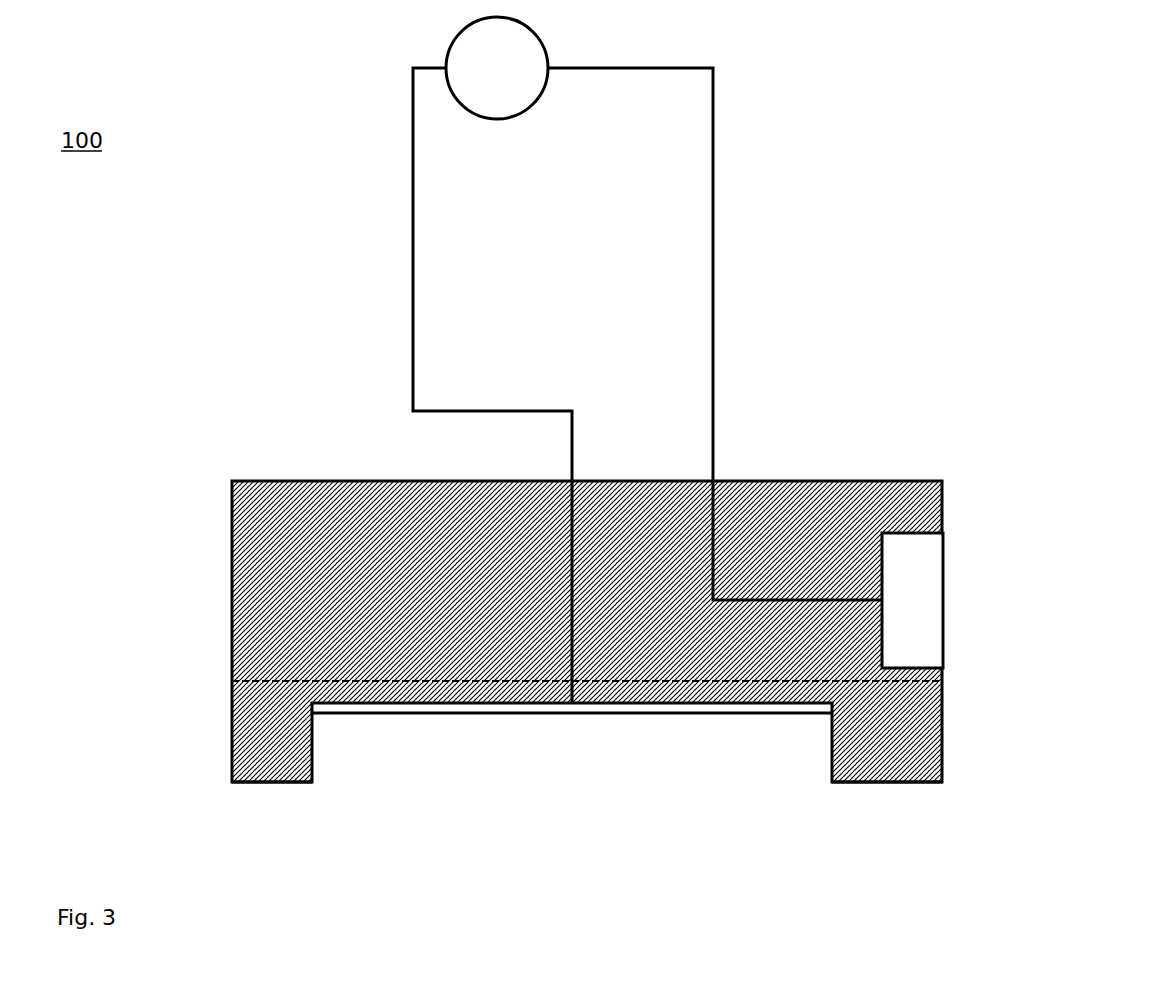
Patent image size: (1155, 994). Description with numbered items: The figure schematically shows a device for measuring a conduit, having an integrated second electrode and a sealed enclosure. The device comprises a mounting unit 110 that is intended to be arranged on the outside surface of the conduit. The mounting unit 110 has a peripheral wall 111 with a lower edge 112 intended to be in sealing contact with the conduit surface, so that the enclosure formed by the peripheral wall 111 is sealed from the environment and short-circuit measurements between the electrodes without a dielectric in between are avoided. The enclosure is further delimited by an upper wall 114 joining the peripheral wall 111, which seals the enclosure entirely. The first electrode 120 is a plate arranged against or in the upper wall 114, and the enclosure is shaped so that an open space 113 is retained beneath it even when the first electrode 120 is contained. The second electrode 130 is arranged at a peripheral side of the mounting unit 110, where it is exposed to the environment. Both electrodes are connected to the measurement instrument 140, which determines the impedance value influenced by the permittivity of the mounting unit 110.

The mounting unit 110 is at (230, 580).
The peripheral wall 111 is at (263, 748).
The lower edge 112 is at (900, 795).
The open space 113 is at (580, 782).
The upper wall 114 is at (637, 692).
The first electrode 120 is at (577, 728).
The second electrode 130 is at (895, 590).
The measurement instrument 140 is at (647, 360).